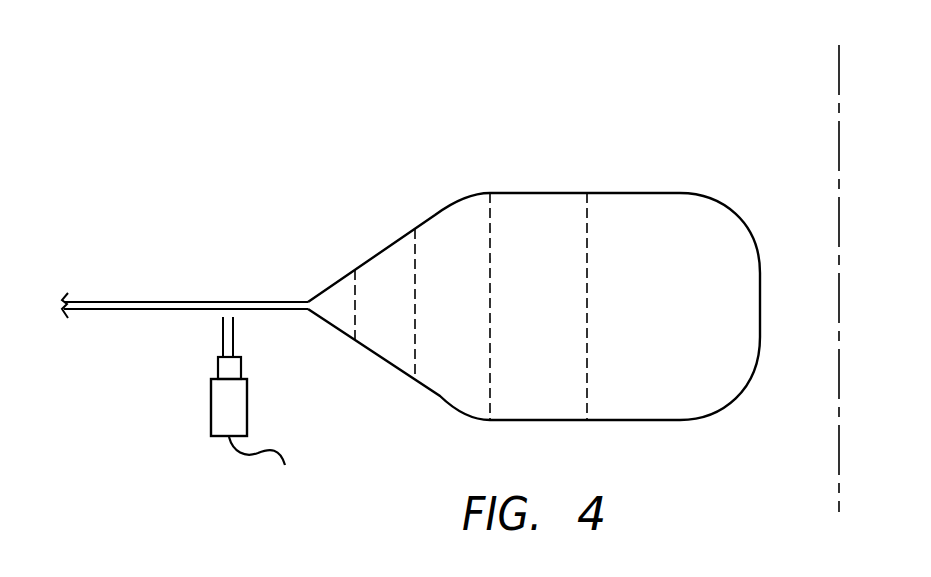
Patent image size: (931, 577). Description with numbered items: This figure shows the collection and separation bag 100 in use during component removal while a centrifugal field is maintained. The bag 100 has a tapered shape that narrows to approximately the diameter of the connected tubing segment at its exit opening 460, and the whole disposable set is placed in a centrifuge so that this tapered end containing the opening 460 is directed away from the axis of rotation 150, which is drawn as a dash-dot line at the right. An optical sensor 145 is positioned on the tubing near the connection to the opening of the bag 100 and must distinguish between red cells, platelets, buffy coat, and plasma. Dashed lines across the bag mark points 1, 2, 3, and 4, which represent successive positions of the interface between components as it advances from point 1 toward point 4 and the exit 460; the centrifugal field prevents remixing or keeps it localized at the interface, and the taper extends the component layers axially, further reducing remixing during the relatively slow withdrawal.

The collection and separation bag 100 is at (735, 214).
The interface point 1 is at (585, 213).
The interface point 2 is at (490, 223).
The interface point 3 is at (413, 260).
The interface point 4 is at (355, 292).
The opening 460 is at (308, 312).
The optical sensor 145 is at (213, 408).
The axis of rotation 150 is at (839, 70).